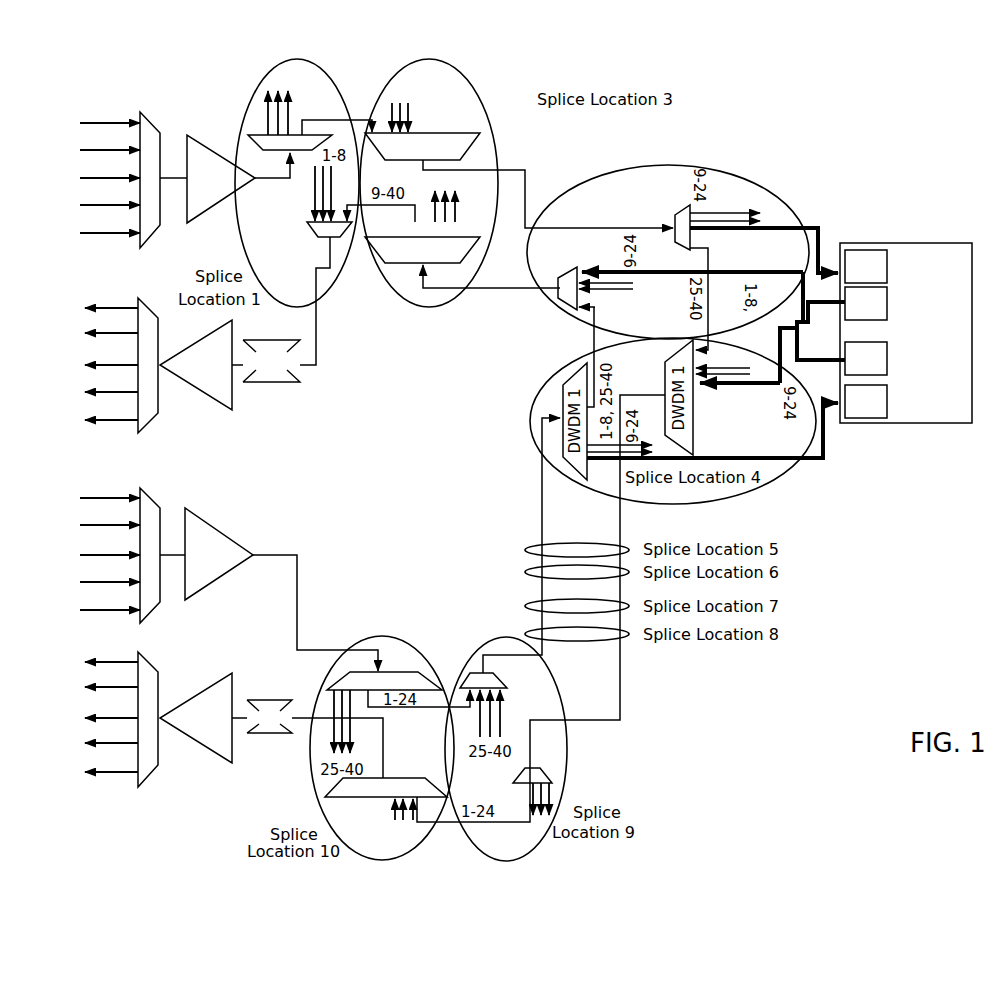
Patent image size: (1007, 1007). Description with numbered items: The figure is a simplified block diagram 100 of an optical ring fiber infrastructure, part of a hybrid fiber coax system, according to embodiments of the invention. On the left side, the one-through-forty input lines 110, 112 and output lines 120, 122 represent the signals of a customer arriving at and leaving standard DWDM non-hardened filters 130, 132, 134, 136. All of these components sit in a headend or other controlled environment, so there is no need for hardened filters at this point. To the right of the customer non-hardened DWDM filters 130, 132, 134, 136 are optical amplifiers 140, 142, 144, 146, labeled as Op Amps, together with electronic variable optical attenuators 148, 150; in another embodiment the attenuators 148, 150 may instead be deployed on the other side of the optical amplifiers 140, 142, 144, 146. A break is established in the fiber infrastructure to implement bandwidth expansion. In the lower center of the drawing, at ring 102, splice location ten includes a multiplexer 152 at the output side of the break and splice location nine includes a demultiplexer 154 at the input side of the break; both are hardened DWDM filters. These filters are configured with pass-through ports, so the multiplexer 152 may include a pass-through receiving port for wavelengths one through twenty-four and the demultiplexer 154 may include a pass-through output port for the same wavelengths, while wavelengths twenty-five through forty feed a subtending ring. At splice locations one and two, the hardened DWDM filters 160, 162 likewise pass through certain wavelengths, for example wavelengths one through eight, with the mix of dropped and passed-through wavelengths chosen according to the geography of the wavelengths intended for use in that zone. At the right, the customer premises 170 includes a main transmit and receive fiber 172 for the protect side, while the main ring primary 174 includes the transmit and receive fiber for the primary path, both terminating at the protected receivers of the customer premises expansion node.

The simplified block diagram 100 is at (116, 79).
The ring 102 is at (305, 712).
The input line 110 is at (70, 150).
The input line 112 is at (60, 530).
The output line 120 is at (70, 337).
The output line 122 is at (68, 700).
The standard DWDM non-hardened filter 130 is at (150, 128).
The standard DWDM non-hardened filter 132 is at (148, 317).
The standard DWDM non-hardened filter 134 is at (150, 612).
The standard DWDM non-hardened filter 136 is at (135, 780).
The optical amplifier 140 is at (206, 216).
The optical amplifier 142 is at (176, 376).
The optical amplifier 144 is at (222, 540).
The optical amplifier 146 is at (203, 747).
The electronic variable optical attenuator 148 is at (293, 347).
The electronic variable optical attenuator 150 is at (268, 700).
The multiplexer 152 is at (411, 777).
The demultiplexer 154 is at (548, 773).
The hardened DWDM filter 160 is at (258, 133).
The hardened DWDM filter 162 is at (516, 201).
The customer premises 170 is at (898, 294).
The main transmit and receive fiber 172 is at (872, 418).
The main ring primary 174 is at (882, 250).